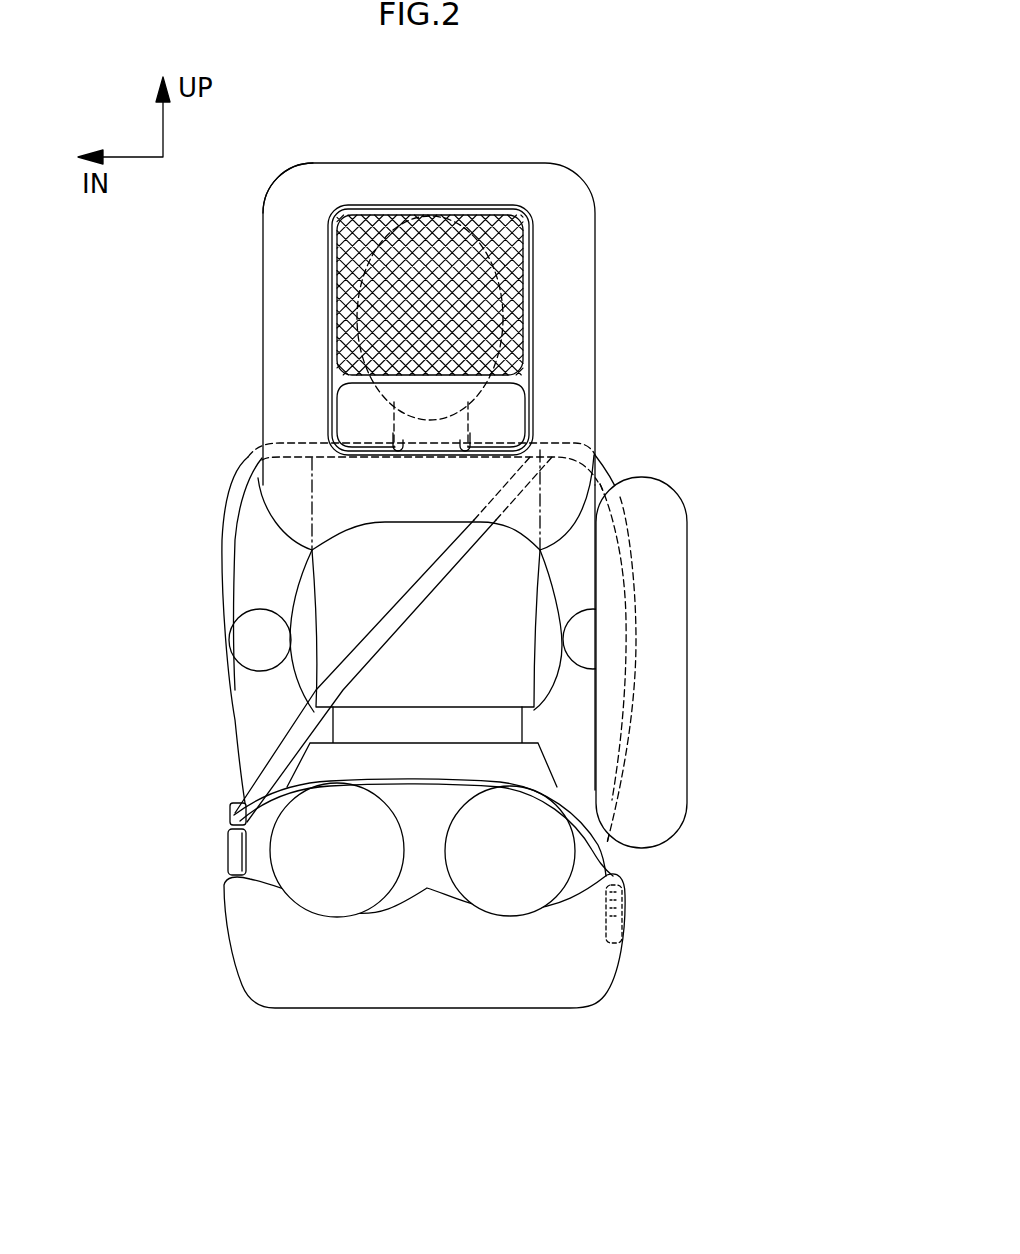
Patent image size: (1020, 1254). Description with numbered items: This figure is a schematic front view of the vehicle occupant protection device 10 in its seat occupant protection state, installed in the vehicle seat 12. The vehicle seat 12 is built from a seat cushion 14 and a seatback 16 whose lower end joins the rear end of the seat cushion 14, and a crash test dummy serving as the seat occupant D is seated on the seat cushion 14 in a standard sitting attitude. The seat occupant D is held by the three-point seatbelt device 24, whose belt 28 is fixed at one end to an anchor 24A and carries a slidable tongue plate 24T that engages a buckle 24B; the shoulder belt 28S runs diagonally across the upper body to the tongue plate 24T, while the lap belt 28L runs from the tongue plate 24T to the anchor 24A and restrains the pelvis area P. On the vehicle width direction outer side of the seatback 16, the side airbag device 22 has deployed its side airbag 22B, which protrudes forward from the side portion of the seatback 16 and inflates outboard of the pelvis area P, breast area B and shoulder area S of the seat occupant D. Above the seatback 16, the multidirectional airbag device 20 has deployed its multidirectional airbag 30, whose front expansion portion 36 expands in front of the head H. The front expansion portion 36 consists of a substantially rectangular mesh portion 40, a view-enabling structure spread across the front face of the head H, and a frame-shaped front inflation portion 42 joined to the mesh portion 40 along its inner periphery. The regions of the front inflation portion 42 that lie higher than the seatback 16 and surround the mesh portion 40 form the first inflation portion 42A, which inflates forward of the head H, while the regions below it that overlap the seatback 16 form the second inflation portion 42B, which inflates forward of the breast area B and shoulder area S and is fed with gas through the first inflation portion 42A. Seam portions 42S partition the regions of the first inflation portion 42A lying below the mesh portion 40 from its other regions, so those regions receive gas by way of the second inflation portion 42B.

The vehicle occupant protection device 10 is at (729, 292).
The vehicle seat 12 is at (216, 508).
The seat cushion 14 is at (535, 990).
The seatback 16 is at (220, 584).
The multidirectional airbag device 20 is at (621, 168).
The side airbag device 22 is at (696, 485).
The side airbag 22B is at (662, 558).
The seatbelt device 24 is at (248, 750).
The anchor 24A is at (618, 925).
The buckle 24B is at (234, 857).
The tongue plate 24T is at (232, 824).
The belt 28 is at (419, 652).
The shoulder belt 28S is at (470, 558).
The lap belt 28L is at (413, 785).
The multidirectional airbag 30 is at (502, 494).
The front expansion portion 36 is at (609, 219).
The mesh portion 40 is at (488, 217).
The front inflation portion 42 is at (170, 470).
The first inflation portion 42A is at (358, 427).
The second inflation portion 42B is at (290, 518).
The seam portions 42S is at (527, 422).
The head area H is at (432, 237).
The shoulder area S is at (570, 492).
The breast area B is at (420, 508).
The seat occupant D is at (225, 561).
The pelvis area P is at (530, 772).